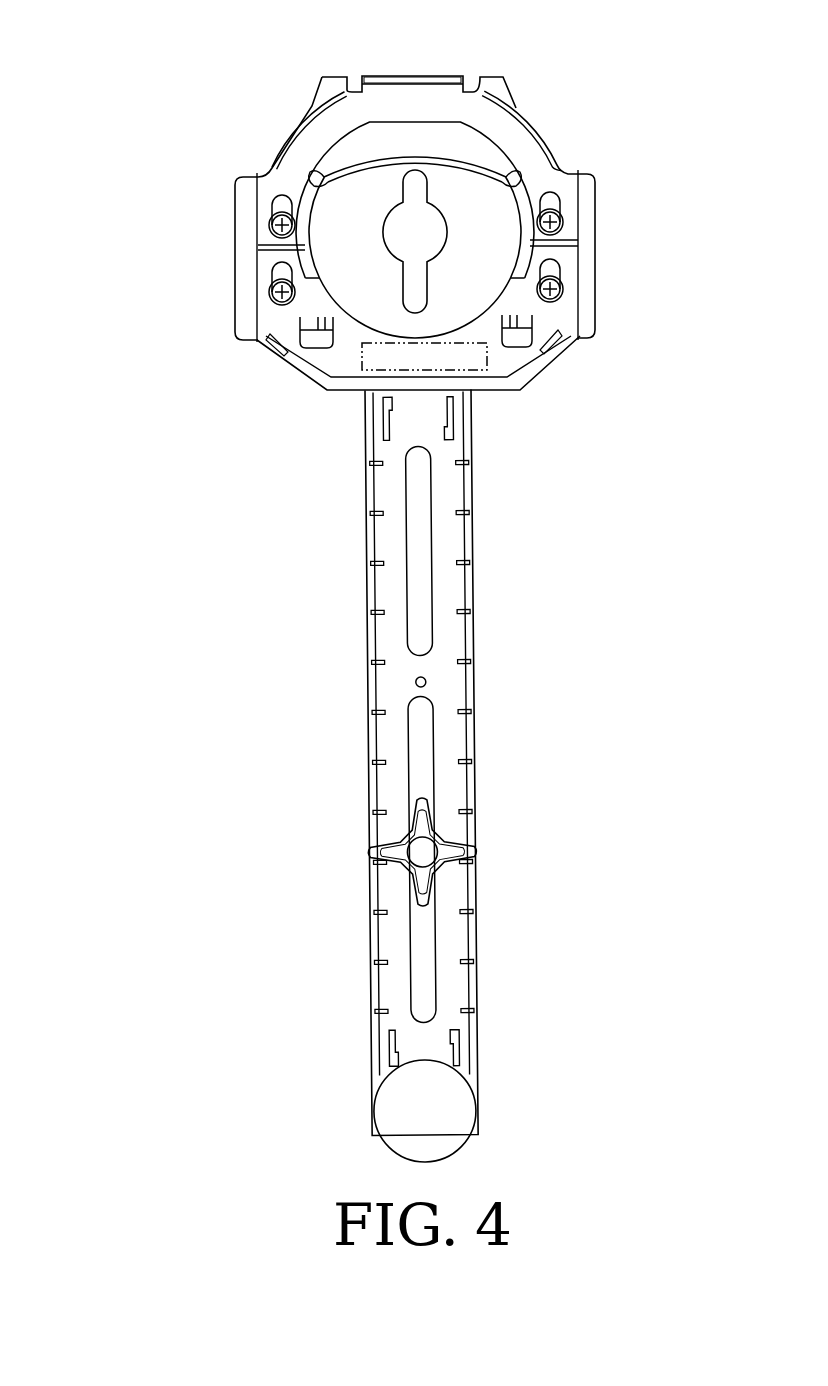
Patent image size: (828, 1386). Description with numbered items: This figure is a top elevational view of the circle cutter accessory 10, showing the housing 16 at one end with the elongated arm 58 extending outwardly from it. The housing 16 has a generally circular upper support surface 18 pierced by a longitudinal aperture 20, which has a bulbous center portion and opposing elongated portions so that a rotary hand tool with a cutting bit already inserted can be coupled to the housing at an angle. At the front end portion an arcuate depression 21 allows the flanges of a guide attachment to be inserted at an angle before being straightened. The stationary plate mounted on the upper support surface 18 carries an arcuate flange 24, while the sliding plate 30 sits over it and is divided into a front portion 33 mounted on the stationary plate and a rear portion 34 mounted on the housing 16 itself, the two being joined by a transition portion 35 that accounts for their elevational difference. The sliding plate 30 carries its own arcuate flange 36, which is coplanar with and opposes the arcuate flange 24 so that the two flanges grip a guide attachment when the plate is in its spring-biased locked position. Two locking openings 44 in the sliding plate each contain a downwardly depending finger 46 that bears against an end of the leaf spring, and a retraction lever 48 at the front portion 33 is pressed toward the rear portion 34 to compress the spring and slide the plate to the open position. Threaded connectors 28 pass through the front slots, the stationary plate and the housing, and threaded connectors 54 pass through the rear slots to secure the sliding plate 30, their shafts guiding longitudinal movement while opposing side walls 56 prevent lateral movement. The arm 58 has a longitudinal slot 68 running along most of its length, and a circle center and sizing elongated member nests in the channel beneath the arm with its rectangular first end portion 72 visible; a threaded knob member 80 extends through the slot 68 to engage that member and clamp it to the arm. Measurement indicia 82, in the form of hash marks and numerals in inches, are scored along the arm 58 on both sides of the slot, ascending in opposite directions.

The circle cutter accessory 10 is at (172, 532).
The housing 16 is at (565, 370).
The upper support surface 18 is at (498, 237).
The longitudinal aperture 20 is at (433, 243).
The arcuate depression 21 is at (385, 157).
The arcuate flange 24 is at (468, 142).
The threaded connectors 28 is at (562, 222).
The sliding plate 30 is at (522, 142).
The front portion 33 is at (333, 132).
The rear portion 34 is at (349, 355).
The transition portion 35 is at (262, 257).
The arcuate flange 36 is at (358, 332).
The locking openings 44 is at (523, 348).
The finger 46 is at (528, 314).
The retraction lever 48 is at (432, 75).
The threaded connectors 54 is at (270, 292).
The side walls 56 is at (236, 192).
The elongated arm 58 is at (492, 743).
The longitudinal slot 68 is at (418, 553).
The first end portion 72 is at (418, 648).
The threaded knob member 80 is at (400, 836).
The measurement indicia 82 is at (466, 705).